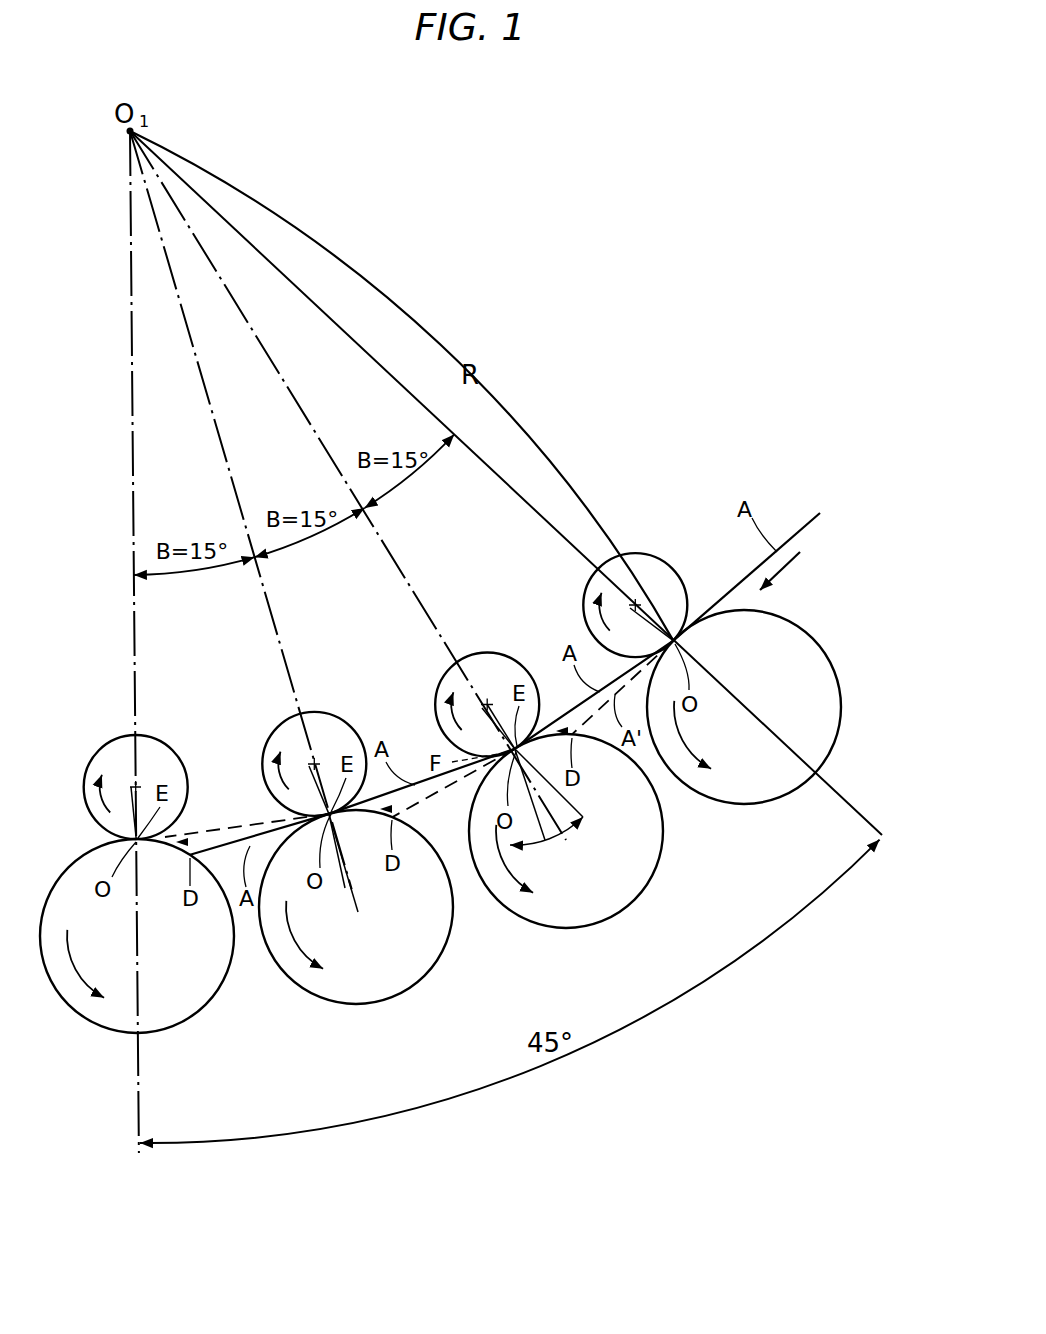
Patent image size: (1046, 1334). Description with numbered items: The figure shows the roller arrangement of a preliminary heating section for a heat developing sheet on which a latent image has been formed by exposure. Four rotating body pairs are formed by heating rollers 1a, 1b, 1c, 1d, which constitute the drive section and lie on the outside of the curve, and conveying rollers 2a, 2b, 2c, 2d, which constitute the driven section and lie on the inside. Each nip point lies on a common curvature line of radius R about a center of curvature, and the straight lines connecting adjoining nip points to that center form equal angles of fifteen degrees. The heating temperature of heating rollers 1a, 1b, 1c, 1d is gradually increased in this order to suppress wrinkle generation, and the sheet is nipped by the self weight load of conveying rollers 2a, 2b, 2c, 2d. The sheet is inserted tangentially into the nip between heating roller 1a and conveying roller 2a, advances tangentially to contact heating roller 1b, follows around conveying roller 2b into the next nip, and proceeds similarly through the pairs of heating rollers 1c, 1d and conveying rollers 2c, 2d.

The heating roller 1a is at (762, 804).
The heating roller 1b is at (580, 929).
The heating roller 1c is at (393, 1005).
The heating roller 1d is at (168, 1032).
The conveying roller 2a is at (667, 558).
The conveying roller 2b is at (495, 655).
The conveying roller 2c is at (315, 713).
The conveying roller 2d is at (160, 737).